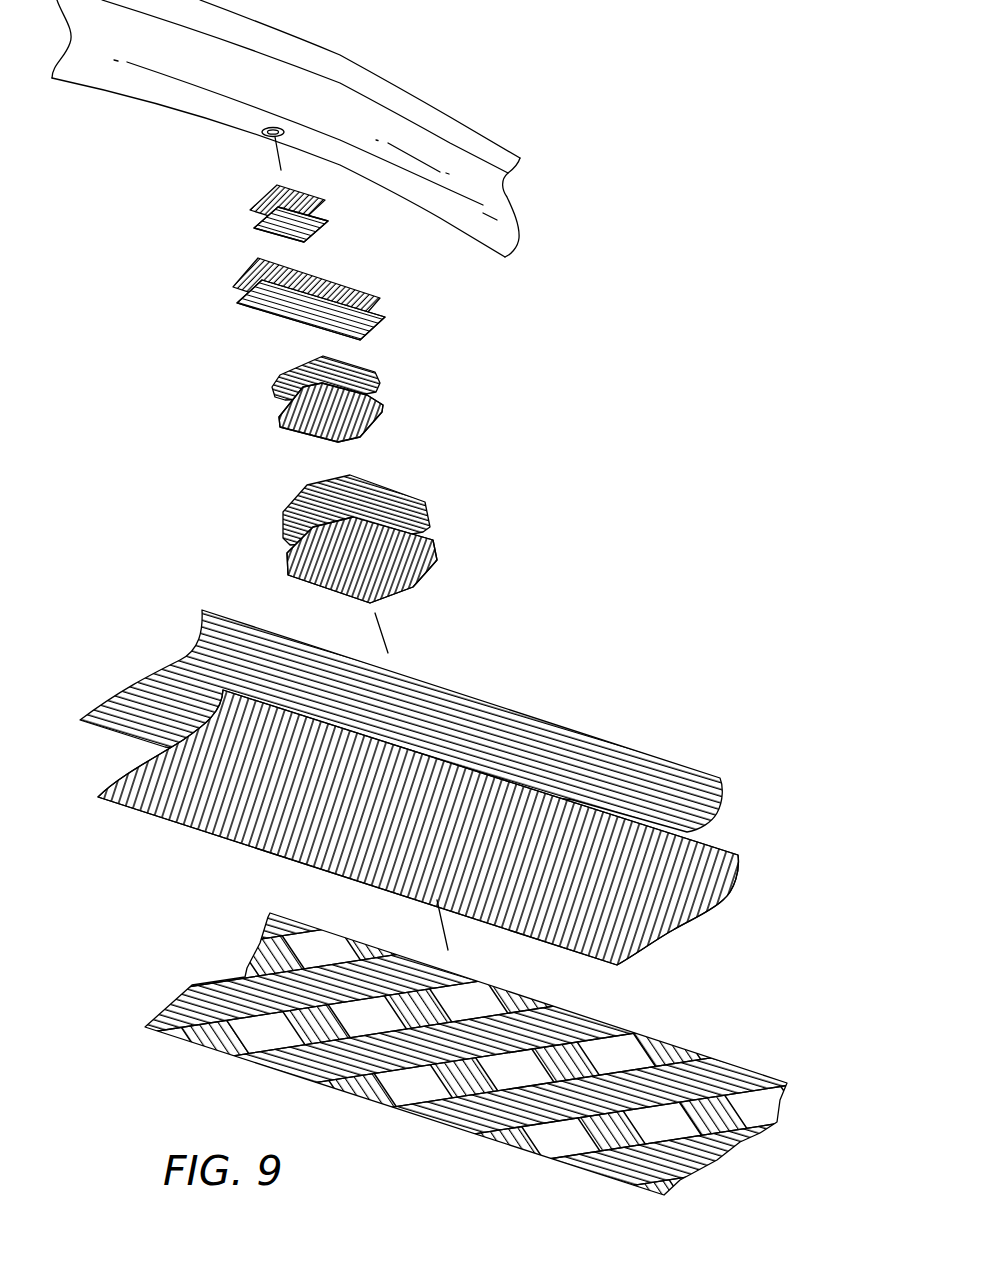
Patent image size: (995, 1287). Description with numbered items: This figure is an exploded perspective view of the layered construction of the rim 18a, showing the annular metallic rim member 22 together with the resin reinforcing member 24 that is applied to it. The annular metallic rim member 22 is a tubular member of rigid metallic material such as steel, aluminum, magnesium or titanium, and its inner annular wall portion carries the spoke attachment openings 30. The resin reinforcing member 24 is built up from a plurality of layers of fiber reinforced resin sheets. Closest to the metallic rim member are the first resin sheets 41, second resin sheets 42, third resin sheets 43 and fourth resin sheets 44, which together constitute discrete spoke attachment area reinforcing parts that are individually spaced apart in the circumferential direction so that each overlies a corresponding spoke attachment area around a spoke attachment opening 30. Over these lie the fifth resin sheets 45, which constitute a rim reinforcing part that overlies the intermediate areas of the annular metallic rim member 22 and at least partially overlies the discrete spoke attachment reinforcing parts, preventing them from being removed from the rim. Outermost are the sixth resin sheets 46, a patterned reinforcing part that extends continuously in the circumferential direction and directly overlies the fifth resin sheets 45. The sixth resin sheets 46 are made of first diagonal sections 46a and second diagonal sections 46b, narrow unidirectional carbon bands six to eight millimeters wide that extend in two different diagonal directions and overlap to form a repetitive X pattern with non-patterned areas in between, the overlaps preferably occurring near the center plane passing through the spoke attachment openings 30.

The rim 18a is at (625, 66).
The annular metallic rim member 22 is at (442, 96).
The spoke attachment openings 30 is at (268, 140).
The resin reinforcing member 24 is at (64, 1007).
The first resin sheets 41 is at (240, 220).
The second resin sheets 42 is at (234, 277).
The third resin sheets 43 is at (260, 372).
The fourth resin sheets 44 is at (276, 506).
The fifth resin sheets 45 is at (136, 668).
The sixth resin sheets 46 is at (239, 950).
The first diagonal sections 46a is at (557, 1032).
The second diagonal sections 46b is at (670, 1057).